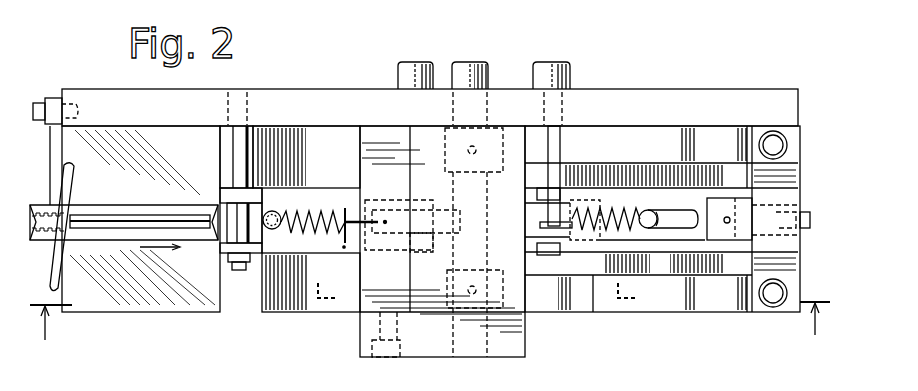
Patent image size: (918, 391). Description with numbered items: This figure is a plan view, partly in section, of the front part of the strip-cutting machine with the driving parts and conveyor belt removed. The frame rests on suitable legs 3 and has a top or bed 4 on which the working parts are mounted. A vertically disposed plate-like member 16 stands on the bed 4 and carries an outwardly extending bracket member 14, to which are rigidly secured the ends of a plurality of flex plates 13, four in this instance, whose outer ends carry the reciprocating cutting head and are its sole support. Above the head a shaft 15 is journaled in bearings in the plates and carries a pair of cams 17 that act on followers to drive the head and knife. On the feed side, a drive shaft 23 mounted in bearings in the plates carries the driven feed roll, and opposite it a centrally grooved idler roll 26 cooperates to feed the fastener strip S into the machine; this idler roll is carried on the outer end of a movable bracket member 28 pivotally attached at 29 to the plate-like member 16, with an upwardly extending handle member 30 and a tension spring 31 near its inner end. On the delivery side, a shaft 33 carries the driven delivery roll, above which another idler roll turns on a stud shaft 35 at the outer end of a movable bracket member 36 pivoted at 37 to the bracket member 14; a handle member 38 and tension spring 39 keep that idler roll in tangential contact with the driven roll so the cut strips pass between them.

The legs 3 is at (430, 331).
The top or bed 4 is at (289, 305).
The flex plates 13 is at (655, 140).
The bracket member 14 is at (796, 185).
The shaft 15 is at (471, 67).
The plate-like member 16 is at (612, 102).
The cams 17 is at (490, 134).
The drive shaft 23 is at (400, 73).
The idler roll 26 is at (398, 224).
The bracket member 28 is at (283, 244).
The pivot 29 is at (243, 270).
The handle member 30 is at (281, 214).
The tension spring 31 is at (321, 210).
The shaft 33 is at (560, 76).
The stud shaft 35 is at (560, 243).
The bracket member 36 is at (654, 242).
The pivot 37 is at (727, 198).
The handle member 38 is at (663, 210).
The tension spring 39 is at (621, 210).
The fastener strip S is at (127, 200).